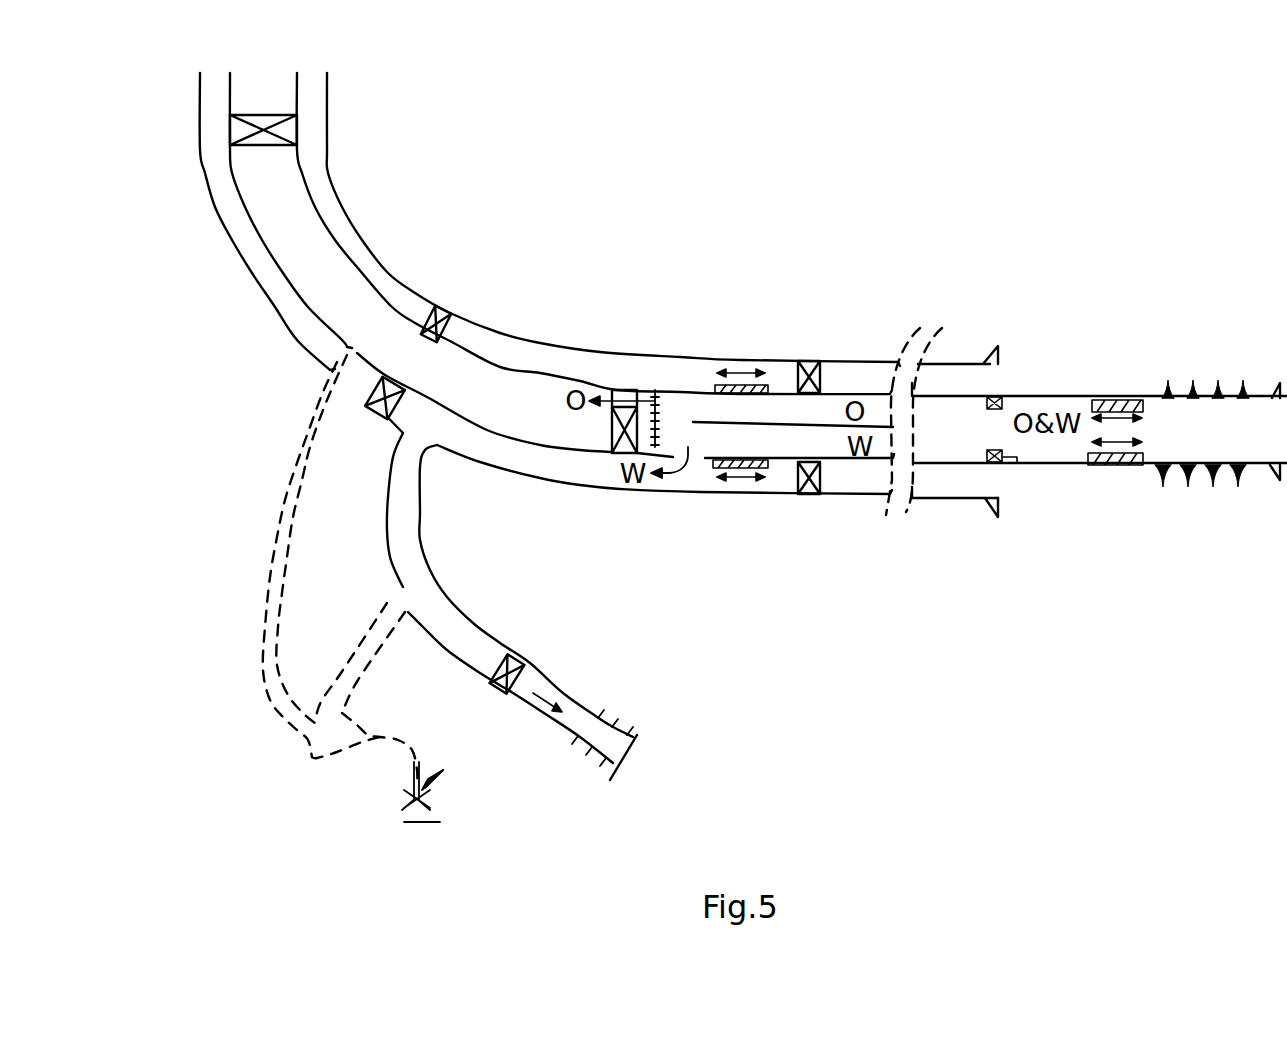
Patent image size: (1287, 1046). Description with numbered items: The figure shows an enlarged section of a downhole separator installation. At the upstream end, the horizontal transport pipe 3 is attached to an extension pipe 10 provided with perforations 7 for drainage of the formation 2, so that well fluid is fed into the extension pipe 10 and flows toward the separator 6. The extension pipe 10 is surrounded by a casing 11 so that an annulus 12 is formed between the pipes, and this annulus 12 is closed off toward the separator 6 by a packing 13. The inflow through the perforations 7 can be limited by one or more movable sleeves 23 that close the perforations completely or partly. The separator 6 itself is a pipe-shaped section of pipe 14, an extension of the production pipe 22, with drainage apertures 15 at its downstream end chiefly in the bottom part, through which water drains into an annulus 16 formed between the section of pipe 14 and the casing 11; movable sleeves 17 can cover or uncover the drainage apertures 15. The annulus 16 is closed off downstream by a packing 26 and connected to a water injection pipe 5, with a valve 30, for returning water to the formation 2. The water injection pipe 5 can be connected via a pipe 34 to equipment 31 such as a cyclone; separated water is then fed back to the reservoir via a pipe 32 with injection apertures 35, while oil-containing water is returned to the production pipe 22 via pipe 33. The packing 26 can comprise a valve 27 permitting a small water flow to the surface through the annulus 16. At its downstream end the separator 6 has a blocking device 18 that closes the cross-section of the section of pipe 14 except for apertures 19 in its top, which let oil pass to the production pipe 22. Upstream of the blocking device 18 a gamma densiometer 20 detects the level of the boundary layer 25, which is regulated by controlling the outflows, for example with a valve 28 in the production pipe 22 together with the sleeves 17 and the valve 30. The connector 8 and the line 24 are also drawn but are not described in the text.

The formation 2 is at (1243, 313).
The horizontal transport pipe 3 is at (946, 360).
The water injection pipe 5 is at (422, 540).
The separator 6 is at (750, 358).
The perforations 7 is at (1183, 397).
The pipe connector 8 is at (618, 727).
The extension pipe 10 is at (1027, 396).
The casing 11 is at (870, 494).
The annulus 12 is at (968, 490).
The packing 13 is at (808, 494).
The section of pipe 14 is at (848, 393).
The drainage apertures 15 is at (692, 467).
The annulus 16 is at (610, 477).
The movable sleeves 17 is at (770, 393).
The blocking device 18 is at (612, 428).
The apertures 19 is at (637, 390).
The gamma densiometer 20 is at (655, 440).
The production pipe 22 is at (500, 367).
The movable sleeves 23 is at (1142, 400).
The lower casing line 24 is at (1017, 463).
The boundary layer 25 is at (693, 420).
The packing 26 is at (438, 307).
The valve 27 is at (372, 390).
The valve 28 is at (278, 115).
The valve 30 is at (513, 665).
The equipment 31 is at (308, 743).
The pipe 32 is at (400, 752).
The pipe 33 is at (297, 470).
The pipe 34 is at (378, 623).
The injection apertures 35 is at (437, 810).